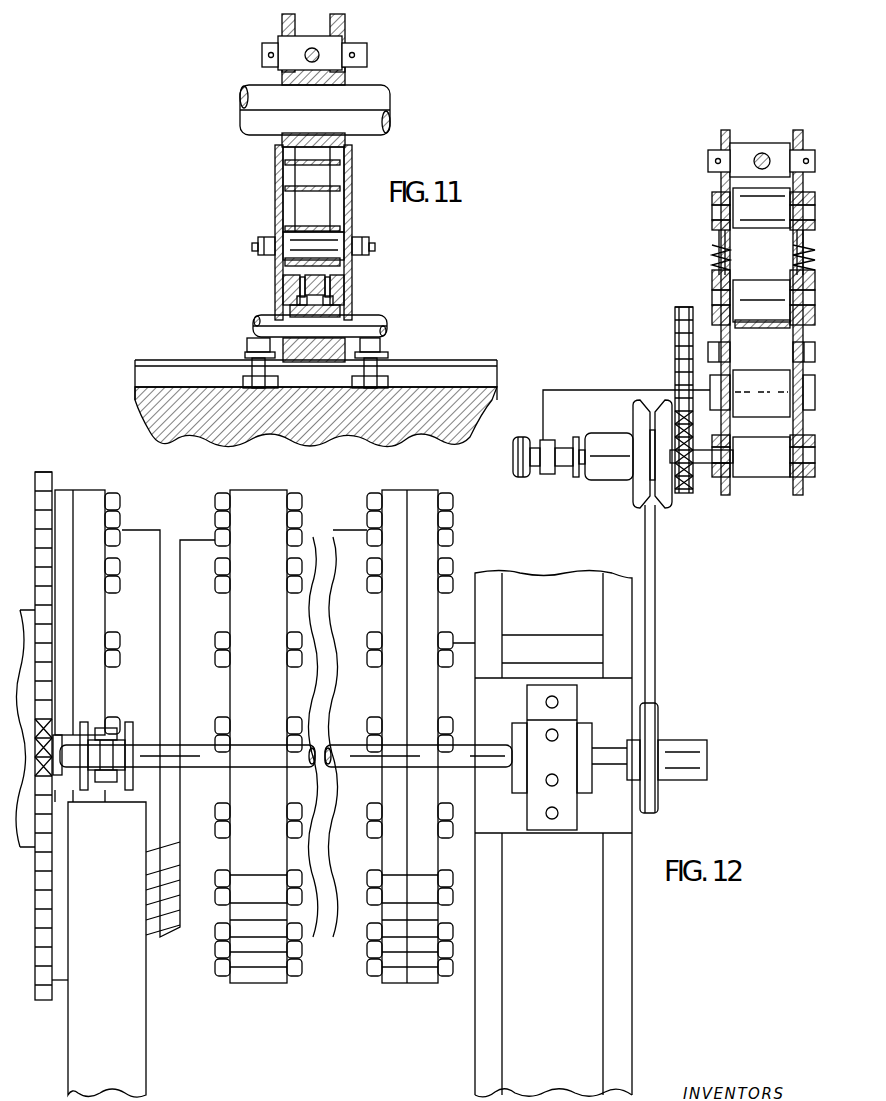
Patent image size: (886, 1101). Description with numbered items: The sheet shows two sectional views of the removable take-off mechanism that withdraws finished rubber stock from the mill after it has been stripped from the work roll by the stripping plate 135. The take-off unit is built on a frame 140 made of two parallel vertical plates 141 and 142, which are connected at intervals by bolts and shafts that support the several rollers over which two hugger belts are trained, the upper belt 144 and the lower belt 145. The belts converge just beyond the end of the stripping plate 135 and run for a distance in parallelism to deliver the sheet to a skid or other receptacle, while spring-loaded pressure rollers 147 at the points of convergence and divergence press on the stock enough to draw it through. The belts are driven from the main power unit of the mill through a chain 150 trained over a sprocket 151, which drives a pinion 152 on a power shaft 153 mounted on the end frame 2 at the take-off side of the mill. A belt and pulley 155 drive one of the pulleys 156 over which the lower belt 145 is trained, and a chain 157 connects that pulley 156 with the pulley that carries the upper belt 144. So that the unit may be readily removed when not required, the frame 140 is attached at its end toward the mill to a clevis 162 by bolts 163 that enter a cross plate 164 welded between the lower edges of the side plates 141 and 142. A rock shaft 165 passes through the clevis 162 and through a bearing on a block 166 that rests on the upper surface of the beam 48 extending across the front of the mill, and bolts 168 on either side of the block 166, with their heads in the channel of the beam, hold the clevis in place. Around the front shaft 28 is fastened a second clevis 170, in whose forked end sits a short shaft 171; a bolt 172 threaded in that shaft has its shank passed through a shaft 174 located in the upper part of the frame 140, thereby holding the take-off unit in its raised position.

In FIG. 12, the end frame 2 is at (620, 980).
In FIG. 11, the shaft 28 is at (378, 101).
In FIG. 11, the beam 48 is at (446, 432).
In FIG. 11, the stripping plate 135 is at (291, 212).
In FIG. 11, the frame 140 is at (276, 173).
In FIG. 11, the vertical plate 141 is at (276, 197).
In FIG. 12, the vertical plate 141 is at (720, 181).
In FIG. 11, the vertical plate 142 is at (346, 264).
In FIG. 12, the vertical plate 142 is at (806, 492).
In FIG. 11, the upper belt 144 is at (340, 163).
In FIG. 12, the upper belt 144 is at (717, 302).
In FIG. 11, the lower belt 145 is at (356, 244).
In FIG. 12, the lower belt 145 is at (716, 330).
In FIG. 12, the spring-loaded pressure rollers 147 is at (734, 300).
In FIG. 12, the chain 150 is at (52, 480).
In FIG. 12, the sprocket 151 is at (58, 735).
In FIG. 12, the pinion 152 is at (114, 725).
In FIG. 12, the power shaft 153 is at (482, 747).
In FIG. 12, the belt and pulley 155 is at (656, 633).
In FIG. 12, the pulley 156 is at (660, 505).
In FIG. 12, the chain 157 is at (676, 313).
In FIG. 11, the clevis 162 is at (346, 304).
In FIG. 11, the bolts 163 is at (346, 285).
In FIG. 11, the cross plate 164 is at (283, 274).
In FIG. 11, the rock shaft 165 is at (385, 326).
In FIG. 11, the block 166 is at (348, 360).
In FIG. 11, the bolts 168 is at (252, 378).
In FIG. 11, the second clevis 170 is at (345, 80).
In FIG. 11, the short shaft 171 is at (340, 43).
In FIG. 11, the bolt 172 is at (305, 52).
In FIG. 12, the bolt 172 is at (766, 153).
In FIG. 12, the shaft 174 is at (745, 155).